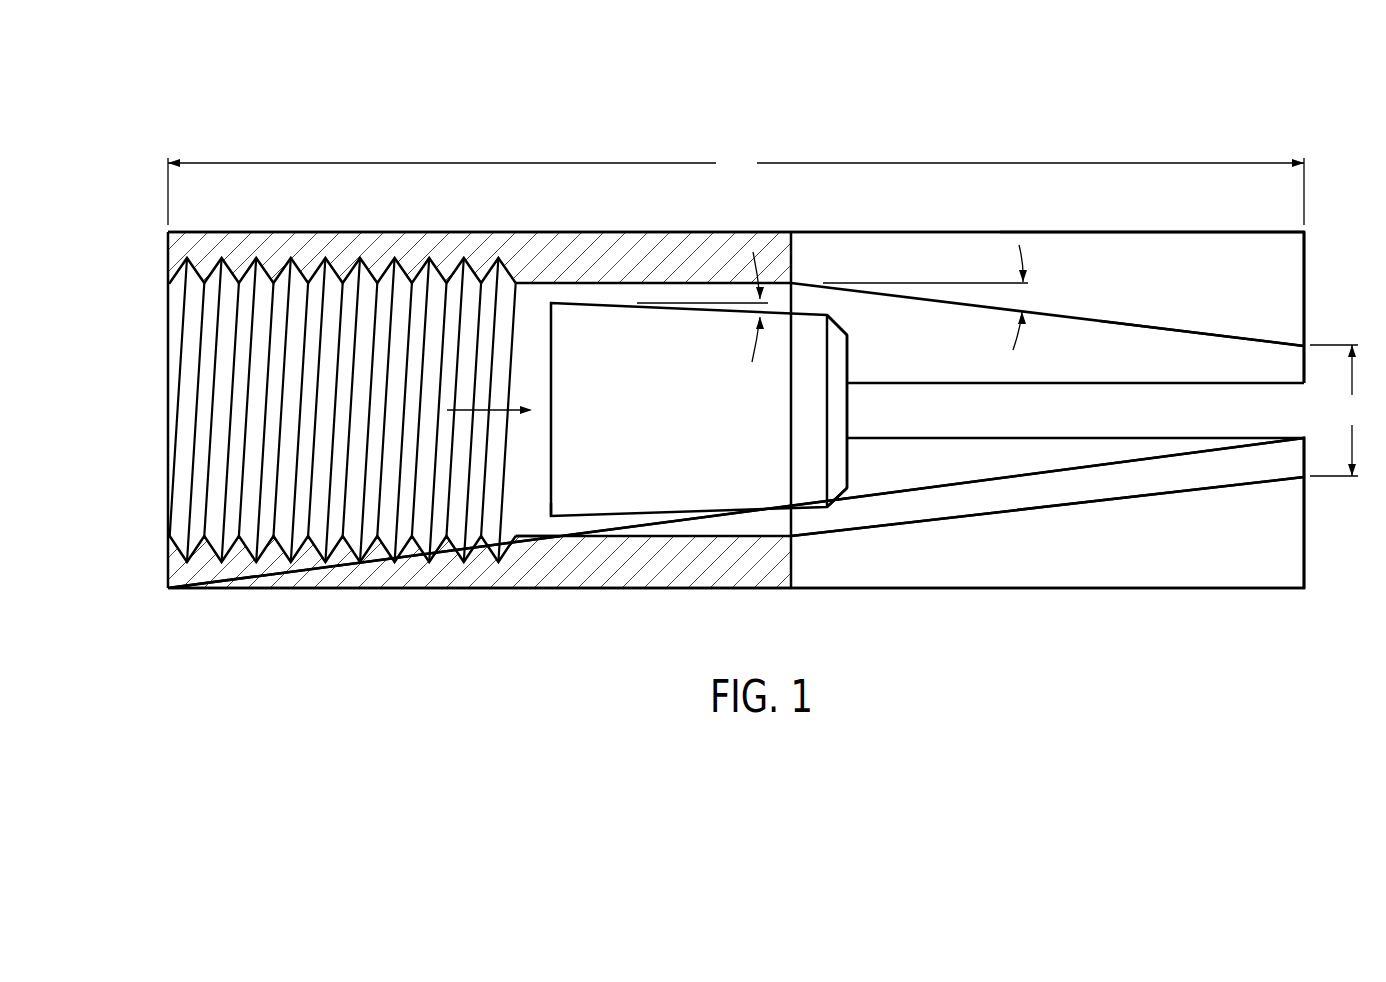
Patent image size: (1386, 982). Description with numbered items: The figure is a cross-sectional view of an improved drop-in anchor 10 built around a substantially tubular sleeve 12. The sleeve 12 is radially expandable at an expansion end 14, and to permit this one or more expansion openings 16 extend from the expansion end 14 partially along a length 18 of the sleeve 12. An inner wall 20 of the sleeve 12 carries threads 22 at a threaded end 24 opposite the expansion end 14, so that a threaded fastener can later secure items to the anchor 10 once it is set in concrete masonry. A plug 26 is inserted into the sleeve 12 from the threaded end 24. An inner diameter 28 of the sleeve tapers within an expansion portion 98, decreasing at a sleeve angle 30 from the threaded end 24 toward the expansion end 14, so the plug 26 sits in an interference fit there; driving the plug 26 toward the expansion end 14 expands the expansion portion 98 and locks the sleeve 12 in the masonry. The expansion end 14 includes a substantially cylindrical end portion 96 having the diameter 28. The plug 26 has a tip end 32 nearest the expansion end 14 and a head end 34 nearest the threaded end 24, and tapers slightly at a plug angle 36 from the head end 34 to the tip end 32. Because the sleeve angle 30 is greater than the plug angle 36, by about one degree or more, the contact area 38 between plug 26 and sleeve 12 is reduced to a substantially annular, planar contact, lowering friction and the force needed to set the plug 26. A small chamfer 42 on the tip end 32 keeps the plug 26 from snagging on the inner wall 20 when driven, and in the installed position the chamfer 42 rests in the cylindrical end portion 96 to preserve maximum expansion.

The drop-in anchor 10 is at (304, 140).
The sleeve 12 is at (677, 590).
The expansion end 14 is at (1305, 276).
The expansion openings 16 is at (1175, 418).
The length 18 is at (736, 186).
The inner wall 20 is at (607, 283).
The threads 22 is at (244, 548).
The threaded end 24 is at (167, 435).
The plug 26 is at (700, 449).
The inner diameter 28 is at (1339, 410).
The sleeve angle 30 is at (1028, 290).
The tip end 32 is at (849, 405).
The head end 34 is at (545, 502).
The plug angle 36 is at (755, 340).
The contact area 38 is at (828, 508).
The chamfer 42 is at (833, 497).
The cylindrical end portion 96 is at (1303, 345).
The expansion portion 98 is at (1144, 232).